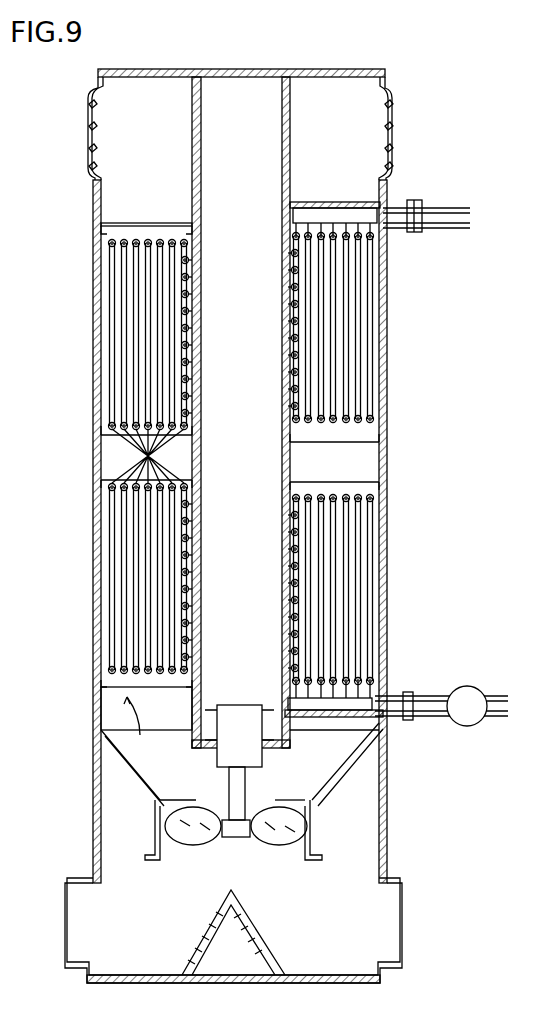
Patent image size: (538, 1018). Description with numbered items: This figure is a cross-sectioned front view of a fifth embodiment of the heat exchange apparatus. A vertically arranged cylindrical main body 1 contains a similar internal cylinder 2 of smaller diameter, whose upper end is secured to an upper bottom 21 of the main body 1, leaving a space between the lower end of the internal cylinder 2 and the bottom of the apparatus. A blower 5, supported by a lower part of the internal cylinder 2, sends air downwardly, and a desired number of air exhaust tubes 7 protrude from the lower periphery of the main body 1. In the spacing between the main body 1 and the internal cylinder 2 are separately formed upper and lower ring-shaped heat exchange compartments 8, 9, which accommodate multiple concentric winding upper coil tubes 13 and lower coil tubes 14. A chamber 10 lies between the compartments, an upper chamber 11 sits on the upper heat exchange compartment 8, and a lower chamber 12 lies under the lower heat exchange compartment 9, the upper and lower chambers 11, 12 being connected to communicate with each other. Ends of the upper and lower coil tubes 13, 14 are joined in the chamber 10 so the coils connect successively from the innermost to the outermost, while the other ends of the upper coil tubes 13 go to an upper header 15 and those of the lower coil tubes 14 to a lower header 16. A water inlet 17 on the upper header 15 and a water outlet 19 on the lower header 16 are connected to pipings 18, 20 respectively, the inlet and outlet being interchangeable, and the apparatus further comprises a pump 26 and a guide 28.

The main body 1 is at (95, 399).
The internal cylinder 2 is at (290, 462).
The blower 5 is at (283, 842).
The air exhaust tubes 7 is at (86, 880).
The upper heat exchange compartment 8 is at (100, 288).
The lower heat exchange compartment 9 is at (100, 547).
The chamber 10 is at (110, 452).
The upper chamber 11 is at (113, 207).
The lower chamber 12 is at (108, 713).
The upper coil tubes 13 is at (122, 362).
The lower coil tubes 14 is at (122, 590).
The upper header 15 is at (338, 208).
The lower header 16 is at (350, 720).
The water inlet 17 is at (398, 210).
The piping 18 is at (450, 212).
The water outlet 19 is at (400, 692).
The piping 20 is at (425, 718).
The upper bottom 21 is at (306, 85).
The pump 26 is at (468, 686).
The guide 28 is at (272, 943).